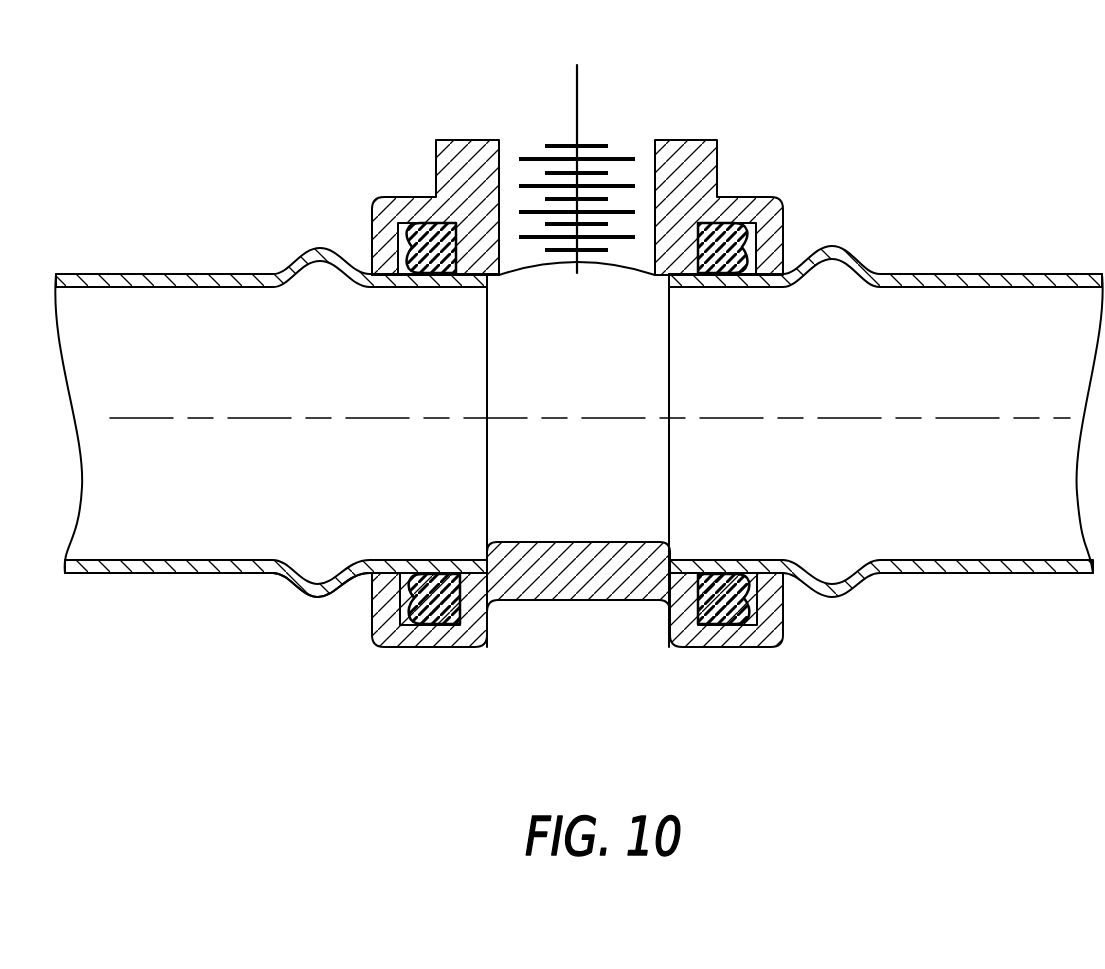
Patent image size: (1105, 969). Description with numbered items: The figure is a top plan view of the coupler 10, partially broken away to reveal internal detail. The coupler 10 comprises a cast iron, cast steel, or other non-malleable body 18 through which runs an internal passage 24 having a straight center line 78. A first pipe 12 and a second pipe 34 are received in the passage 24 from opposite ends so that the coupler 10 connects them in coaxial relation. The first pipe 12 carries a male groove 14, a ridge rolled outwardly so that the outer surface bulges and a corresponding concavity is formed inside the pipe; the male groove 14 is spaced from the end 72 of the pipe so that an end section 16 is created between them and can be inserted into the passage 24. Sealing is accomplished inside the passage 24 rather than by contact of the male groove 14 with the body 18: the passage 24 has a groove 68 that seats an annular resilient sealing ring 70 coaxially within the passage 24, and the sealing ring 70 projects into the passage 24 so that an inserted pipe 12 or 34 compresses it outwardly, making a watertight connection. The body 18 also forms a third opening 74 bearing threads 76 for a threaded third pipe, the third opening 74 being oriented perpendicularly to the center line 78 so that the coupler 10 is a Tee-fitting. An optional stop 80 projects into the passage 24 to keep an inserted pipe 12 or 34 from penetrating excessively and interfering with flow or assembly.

The coupler 10 is at (400, 94).
The first pipe 12 is at (149, 486).
The male groove 14 is at (323, 598).
The end section 16 is at (378, 560).
The body 18 is at (598, 658).
The internal passage 24 is at (562, 398).
The second pipe 34 is at (982, 358).
The groove 68 is at (400, 306).
The sealing ring 70 is at (452, 280).
The end of pipe 72 is at (490, 281).
The third opening 74 is at (551, 98).
The threads 76 is at (620, 155).
The center line 78 is at (903, 417).
The stop 80 is at (489, 532).